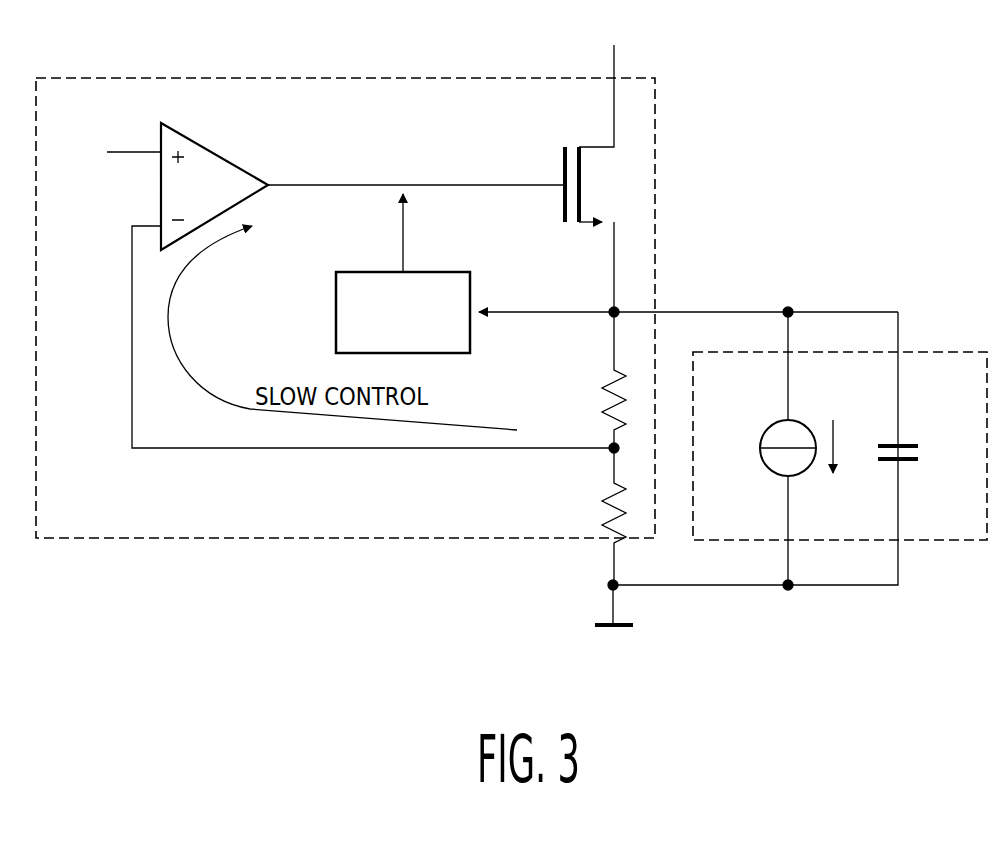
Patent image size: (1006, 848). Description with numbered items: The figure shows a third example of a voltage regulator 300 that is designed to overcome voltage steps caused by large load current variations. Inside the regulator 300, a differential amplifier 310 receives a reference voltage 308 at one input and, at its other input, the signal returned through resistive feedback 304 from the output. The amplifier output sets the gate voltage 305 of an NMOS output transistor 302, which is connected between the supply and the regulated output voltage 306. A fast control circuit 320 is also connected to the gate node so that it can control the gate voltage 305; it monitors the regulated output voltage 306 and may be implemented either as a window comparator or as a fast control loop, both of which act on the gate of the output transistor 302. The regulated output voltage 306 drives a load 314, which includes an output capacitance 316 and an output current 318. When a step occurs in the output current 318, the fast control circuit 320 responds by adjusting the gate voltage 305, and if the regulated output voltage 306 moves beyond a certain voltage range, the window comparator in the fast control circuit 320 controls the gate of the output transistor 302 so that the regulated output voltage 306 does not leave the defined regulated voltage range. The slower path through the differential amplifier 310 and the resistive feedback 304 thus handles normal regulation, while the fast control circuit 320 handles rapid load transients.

The third voltage regulator 300 is at (183, 78).
The output transistor 302 is at (578, 226).
The resistive feedback 304 is at (285, 450).
The gate voltage 305 is at (360, 185).
The regulated output voltage 306 is at (835, 312).
The reference voltage 308 is at (80, 168).
The differential amplifier 310 is at (222, 152).
The load 314 is at (956, 352).
The output capacitance 316 is at (915, 462).
The output current 318 is at (762, 468).
The fast control circuit 320 is at (336, 322).